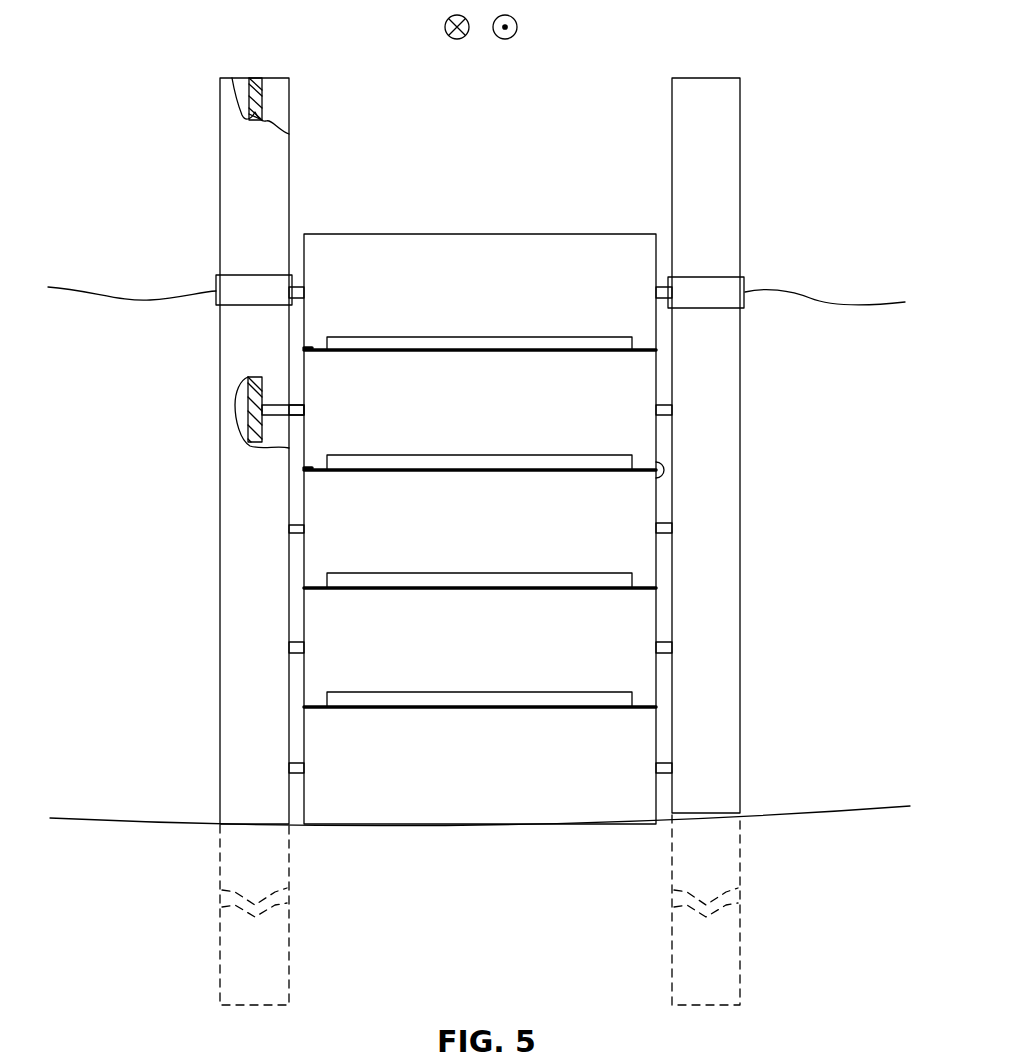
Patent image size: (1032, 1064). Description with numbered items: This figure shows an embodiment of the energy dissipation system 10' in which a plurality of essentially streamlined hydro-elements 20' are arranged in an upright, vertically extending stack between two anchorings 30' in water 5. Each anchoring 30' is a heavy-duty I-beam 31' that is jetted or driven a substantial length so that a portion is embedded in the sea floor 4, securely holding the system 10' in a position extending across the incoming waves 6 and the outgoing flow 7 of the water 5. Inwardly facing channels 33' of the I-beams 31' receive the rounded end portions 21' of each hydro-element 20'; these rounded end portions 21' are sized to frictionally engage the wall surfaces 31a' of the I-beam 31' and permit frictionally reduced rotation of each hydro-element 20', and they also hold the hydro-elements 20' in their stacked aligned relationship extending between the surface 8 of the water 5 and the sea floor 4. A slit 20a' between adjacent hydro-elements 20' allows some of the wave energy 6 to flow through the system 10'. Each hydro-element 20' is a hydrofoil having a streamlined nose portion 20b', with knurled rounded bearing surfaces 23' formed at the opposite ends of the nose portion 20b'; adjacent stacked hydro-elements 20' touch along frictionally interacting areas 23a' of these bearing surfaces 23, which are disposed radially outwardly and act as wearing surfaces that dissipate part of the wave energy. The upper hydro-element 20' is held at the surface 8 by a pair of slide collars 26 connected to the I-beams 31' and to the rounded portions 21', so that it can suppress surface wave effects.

The sea floor 4 is at (123, 822).
The water 5 is at (478, 510).
The wave energy 6 is at (445, 27).
The outgoing flow 7 is at (517, 27).
The surface 8 is at (813, 302).
The energy dissipation system 10' is at (853, 221).
The hydro-element 20' is at (484, 529).
The slit 20a' is at (479, 494).
The streamlined nose portion 20b' is at (480, 589).
The rounded end portion 21' is at (435, 512).
The bearing surface 23 is at (324, 439).
The knurled rounded bearing surface 23' is at (624, 492).
The frictionally interacting area 23a' is at (480, 502).
The slide collar 26 is at (261, 282).
The anchoring 30' is at (479, 541).
The I-beam 31' is at (485, 541).
The wall surface 31a' is at (208, 412).
The inwardly facing channel 33' is at (256, 229).